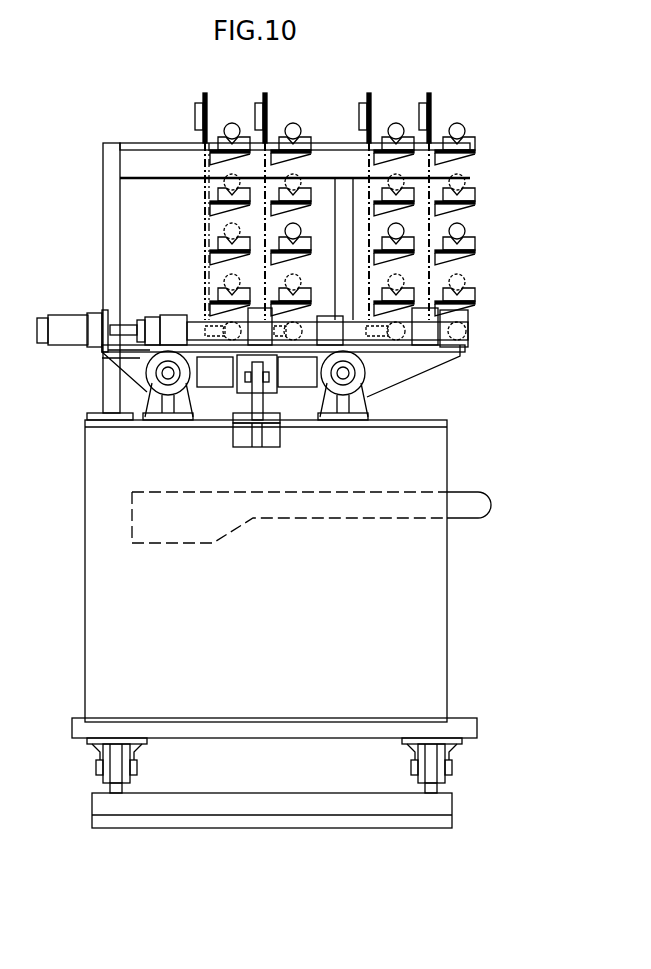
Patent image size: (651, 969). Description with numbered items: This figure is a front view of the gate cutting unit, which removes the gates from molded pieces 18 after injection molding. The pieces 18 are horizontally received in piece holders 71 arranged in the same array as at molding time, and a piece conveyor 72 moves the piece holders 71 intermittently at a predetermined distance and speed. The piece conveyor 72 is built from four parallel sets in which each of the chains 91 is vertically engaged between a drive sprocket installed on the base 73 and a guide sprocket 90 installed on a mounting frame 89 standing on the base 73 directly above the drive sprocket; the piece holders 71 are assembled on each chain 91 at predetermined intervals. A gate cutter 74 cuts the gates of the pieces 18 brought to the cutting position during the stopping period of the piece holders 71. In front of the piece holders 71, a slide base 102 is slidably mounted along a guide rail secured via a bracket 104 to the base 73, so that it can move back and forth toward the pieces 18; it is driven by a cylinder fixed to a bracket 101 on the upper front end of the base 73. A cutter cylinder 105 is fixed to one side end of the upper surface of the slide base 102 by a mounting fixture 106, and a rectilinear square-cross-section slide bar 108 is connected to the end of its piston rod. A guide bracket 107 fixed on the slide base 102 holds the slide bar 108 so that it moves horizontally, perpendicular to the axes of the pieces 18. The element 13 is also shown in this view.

The workpiece tube 13 is at (470, 513).
The pieces 18 is at (294, 122).
The piece holders 71 is at (218, 240).
The piece conveyor 72 is at (462, 117).
The base 73 is at (448, 468).
The gate cutter 74 is at (472, 348).
The mounting frame 89 is at (103, 204).
The guide sprocket 90 is at (206, 96).
The chains 91 is at (205, 200).
The bracket 101 is at (262, 398).
The slide base 102 is at (127, 370).
The bracket 104 is at (468, 312).
The cutter cylinder 105 is at (66, 318).
The mounting fixture 106 is at (105, 352).
The guide bracket 107 is at (174, 318).
The slide bar 108 is at (360, 331).